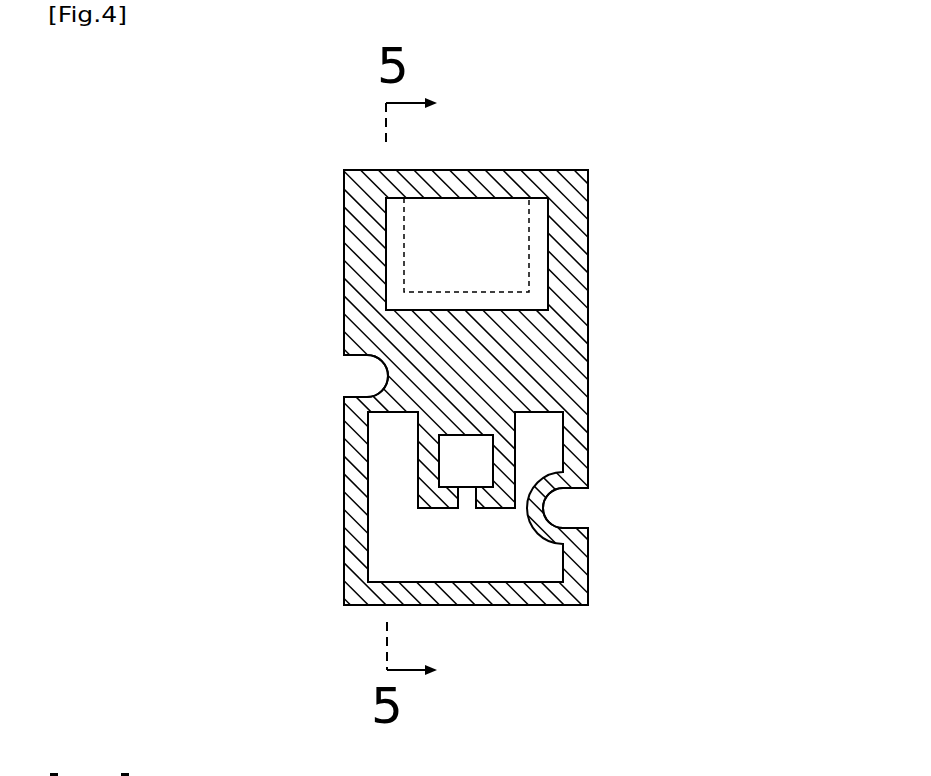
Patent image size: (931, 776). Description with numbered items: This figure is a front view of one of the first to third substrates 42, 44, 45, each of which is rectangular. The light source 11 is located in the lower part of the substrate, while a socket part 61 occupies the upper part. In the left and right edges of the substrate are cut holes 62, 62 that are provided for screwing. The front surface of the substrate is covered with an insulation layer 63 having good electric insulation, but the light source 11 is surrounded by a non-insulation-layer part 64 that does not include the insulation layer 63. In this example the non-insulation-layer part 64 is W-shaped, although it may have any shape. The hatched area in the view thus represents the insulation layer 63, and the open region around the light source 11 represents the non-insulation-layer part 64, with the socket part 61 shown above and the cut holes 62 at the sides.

The first substrate 42 is at (465, 371).
The second substrate 44 is at (465, 371).
The third substrate 45 is at (588, 190).
The socket part 61 is at (513, 254).
The cut hole 62 is at (355, 362).
The insulation layer 63 is at (582, 349).
The light source 11 is at (466, 458).
The non-insulation-layer part 64 is at (468, 572).